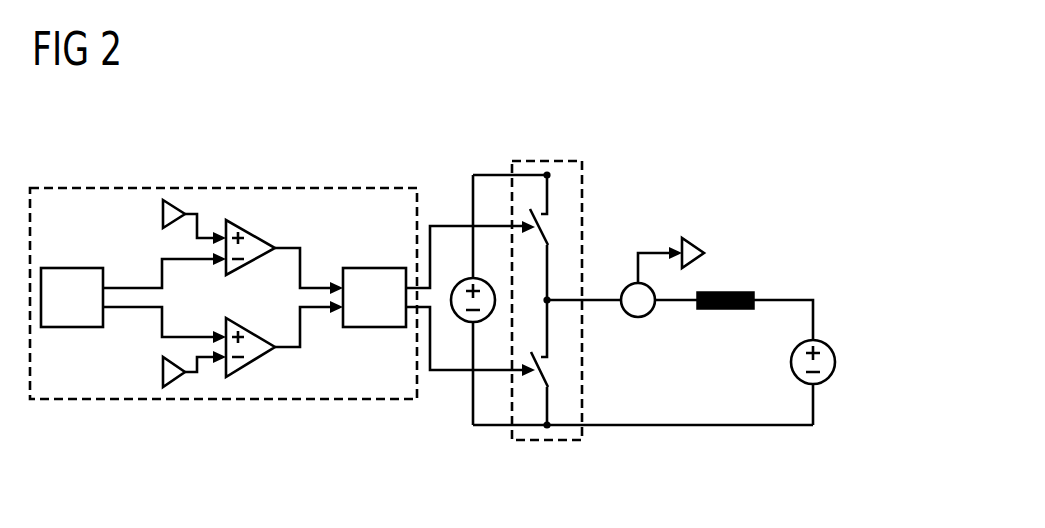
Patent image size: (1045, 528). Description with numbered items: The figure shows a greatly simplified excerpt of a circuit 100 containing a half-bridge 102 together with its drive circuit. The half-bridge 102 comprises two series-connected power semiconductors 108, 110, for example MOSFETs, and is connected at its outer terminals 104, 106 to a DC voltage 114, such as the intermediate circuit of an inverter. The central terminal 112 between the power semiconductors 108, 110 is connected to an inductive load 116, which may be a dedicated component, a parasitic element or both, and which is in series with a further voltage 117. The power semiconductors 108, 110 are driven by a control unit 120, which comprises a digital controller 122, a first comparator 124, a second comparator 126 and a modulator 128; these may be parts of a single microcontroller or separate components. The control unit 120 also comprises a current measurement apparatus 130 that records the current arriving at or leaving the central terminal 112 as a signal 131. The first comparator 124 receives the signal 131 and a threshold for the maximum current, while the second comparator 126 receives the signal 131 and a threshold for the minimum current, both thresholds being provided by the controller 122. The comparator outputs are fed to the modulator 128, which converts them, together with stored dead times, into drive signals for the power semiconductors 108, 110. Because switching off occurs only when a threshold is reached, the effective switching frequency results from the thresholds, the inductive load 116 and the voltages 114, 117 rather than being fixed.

The circuit 100 is at (622, 81).
The half-bridge 102 is at (591, 300).
The outer terminal 104 is at (550, 136).
The outer terminal 106 is at (547, 465).
The power semiconductor 108 is at (590, 237).
The power semiconductor 110 is at (591, 362).
The central terminal 112 is at (597, 335).
The DC voltage 114 is at (464, 267).
The inductive load 116 is at (755, 278).
The voltage 117 is at (857, 382).
The control unit 120 is at (223, 254).
The digital controller 122 is at (72, 366).
The first comparator 124 is at (284, 202).
The second comparator 126 is at (284, 382).
The modulator 128 is at (374, 218).
The current measurement apparatus 130 is at (642, 299).
The signal 131 is at (441, 287).